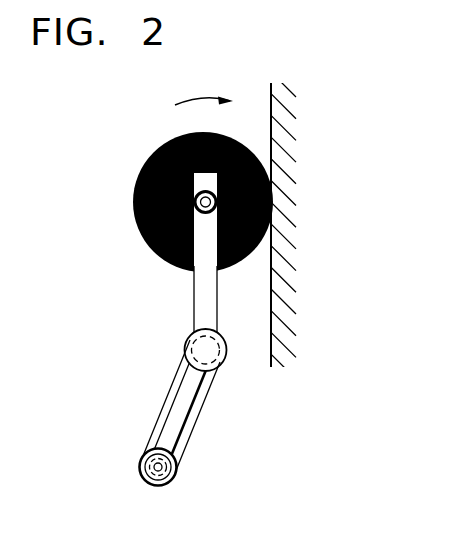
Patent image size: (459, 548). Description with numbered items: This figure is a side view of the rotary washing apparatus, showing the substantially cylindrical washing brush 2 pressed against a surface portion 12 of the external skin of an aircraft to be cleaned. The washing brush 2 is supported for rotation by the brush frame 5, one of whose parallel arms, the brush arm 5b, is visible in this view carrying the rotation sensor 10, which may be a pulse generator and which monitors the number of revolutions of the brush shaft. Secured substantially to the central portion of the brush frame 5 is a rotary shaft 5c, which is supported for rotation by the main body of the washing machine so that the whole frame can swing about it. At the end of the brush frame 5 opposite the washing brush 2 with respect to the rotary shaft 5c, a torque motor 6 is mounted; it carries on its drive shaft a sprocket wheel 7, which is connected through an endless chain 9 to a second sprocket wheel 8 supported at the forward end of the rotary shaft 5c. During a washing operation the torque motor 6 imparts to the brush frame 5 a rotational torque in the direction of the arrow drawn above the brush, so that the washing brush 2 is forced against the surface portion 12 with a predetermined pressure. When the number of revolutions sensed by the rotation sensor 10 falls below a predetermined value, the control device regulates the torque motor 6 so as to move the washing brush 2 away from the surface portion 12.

The washing brush 2 is at (147, 159).
The brush frame 5 is at (190, 412).
The brush arm 5b is at (194, 310).
The rotary shaft 5c is at (225, 357).
The torque motor 6 is at (168, 485).
The sprocket wheel 7 is at (141, 463).
The sprocket wheel 8 is at (189, 341).
The endless chain 9 is at (159, 417).
The rotation sensor 10 is at (205, 213).
The surface portion 12 is at (268, 262).